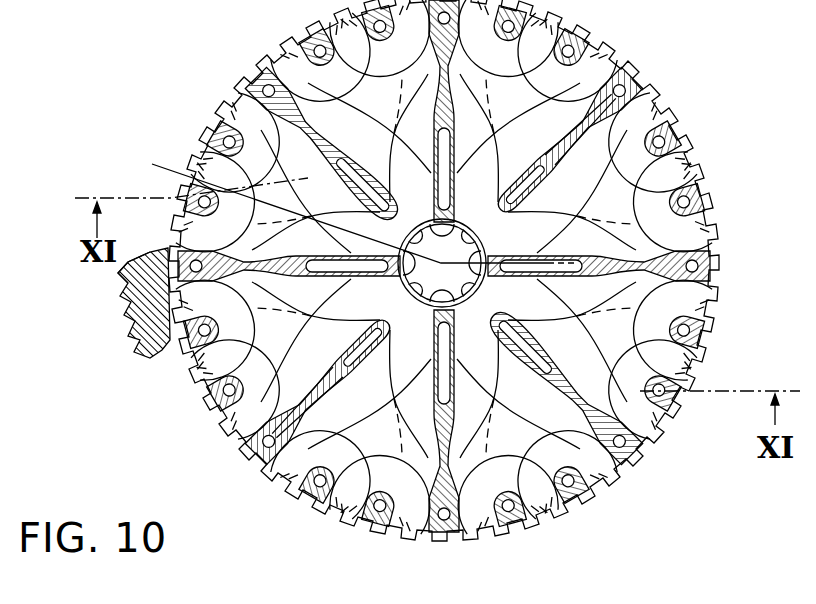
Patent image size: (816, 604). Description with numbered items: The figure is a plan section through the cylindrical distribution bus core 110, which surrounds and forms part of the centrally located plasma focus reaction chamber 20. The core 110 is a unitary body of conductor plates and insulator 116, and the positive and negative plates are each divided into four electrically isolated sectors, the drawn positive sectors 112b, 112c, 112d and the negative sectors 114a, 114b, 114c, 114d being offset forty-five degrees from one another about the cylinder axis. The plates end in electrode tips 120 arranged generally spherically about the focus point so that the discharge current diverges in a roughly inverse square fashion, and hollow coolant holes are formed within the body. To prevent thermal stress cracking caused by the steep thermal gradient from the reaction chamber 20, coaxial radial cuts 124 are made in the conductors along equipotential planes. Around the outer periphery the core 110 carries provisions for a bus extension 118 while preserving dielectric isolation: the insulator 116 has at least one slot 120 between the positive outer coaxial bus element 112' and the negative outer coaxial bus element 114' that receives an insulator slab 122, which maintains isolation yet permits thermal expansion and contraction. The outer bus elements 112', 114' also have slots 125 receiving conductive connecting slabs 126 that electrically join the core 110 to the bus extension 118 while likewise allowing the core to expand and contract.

The plasma focus reaction chamber 20 is at (487, 252).
The cylindrical core 110 is at (150, 396).
The positive outer coaxial bus element 112' is at (262, 266).
The positive plate sector 112b is at (718, 268).
The positive plate sector 112c is at (447, 545).
The positive plate sector 112d is at (221, 421).
The negative outer coaxial bus element 114' is at (189, 327).
The negative plate sector 114a is at (641, 76).
The negative plate sector 114b is at (638, 477).
The negative plate sector 114c is at (265, 479).
The negative plate sector 114d is at (248, 74).
The insulator 116 is at (196, 137).
The bus extension 118 is at (116, 327).
The electrode tip 120 is at (197, 152).
The insulator slab 122 is at (504, 166).
The coaxial radial cut 124 is at (633, 67).
The slot 125 is at (349, 228).
The conductive connecting slab 126 is at (123, 279).